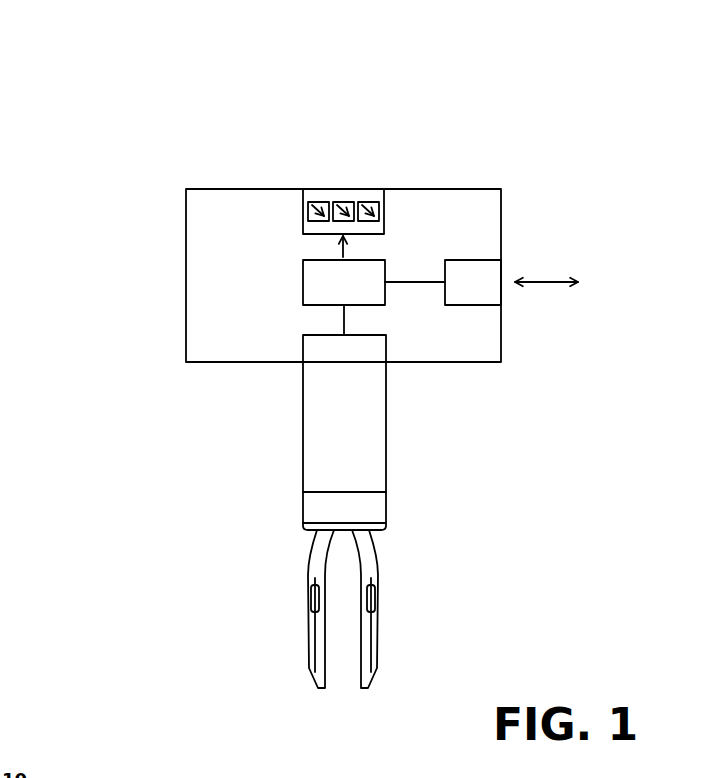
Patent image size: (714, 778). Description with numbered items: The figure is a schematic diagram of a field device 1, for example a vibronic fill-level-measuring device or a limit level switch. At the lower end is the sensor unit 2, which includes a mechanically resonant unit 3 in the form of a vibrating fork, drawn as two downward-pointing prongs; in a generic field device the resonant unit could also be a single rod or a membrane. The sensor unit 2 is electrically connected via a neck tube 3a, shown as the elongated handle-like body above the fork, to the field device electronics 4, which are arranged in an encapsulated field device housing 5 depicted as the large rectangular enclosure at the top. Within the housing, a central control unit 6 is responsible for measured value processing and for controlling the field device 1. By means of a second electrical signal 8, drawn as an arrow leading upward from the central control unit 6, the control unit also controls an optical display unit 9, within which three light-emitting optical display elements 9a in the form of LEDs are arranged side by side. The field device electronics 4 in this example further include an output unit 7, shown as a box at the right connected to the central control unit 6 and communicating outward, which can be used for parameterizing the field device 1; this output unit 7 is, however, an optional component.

The field device 1 is at (137, 72).
The sensor unit 2 is at (482, 525).
The mechanically resonant unit 3 is at (393, 610).
The neck tube 3a is at (402, 432).
The field device electronics 4 is at (537, 208).
The field device housing 5 is at (468, 184).
The central control unit 6 is at (344, 282).
The output unit 7 is at (473, 282).
The second electrical signal 8 is at (354, 246).
The optical display unit 9 is at (357, 188).
The optical display elements 9a is at (361, 205).